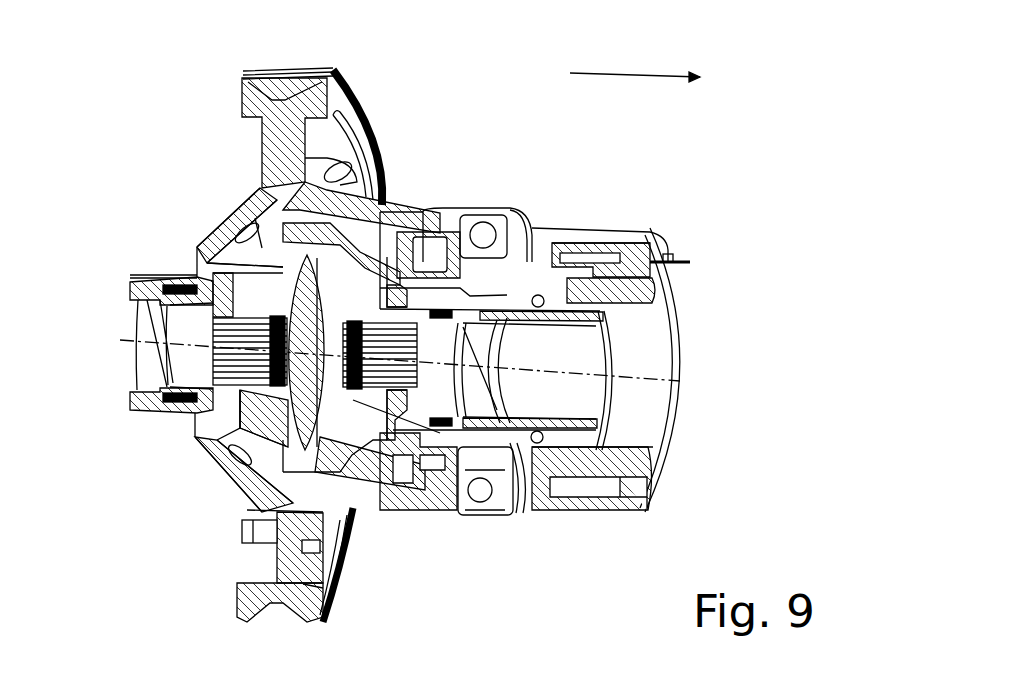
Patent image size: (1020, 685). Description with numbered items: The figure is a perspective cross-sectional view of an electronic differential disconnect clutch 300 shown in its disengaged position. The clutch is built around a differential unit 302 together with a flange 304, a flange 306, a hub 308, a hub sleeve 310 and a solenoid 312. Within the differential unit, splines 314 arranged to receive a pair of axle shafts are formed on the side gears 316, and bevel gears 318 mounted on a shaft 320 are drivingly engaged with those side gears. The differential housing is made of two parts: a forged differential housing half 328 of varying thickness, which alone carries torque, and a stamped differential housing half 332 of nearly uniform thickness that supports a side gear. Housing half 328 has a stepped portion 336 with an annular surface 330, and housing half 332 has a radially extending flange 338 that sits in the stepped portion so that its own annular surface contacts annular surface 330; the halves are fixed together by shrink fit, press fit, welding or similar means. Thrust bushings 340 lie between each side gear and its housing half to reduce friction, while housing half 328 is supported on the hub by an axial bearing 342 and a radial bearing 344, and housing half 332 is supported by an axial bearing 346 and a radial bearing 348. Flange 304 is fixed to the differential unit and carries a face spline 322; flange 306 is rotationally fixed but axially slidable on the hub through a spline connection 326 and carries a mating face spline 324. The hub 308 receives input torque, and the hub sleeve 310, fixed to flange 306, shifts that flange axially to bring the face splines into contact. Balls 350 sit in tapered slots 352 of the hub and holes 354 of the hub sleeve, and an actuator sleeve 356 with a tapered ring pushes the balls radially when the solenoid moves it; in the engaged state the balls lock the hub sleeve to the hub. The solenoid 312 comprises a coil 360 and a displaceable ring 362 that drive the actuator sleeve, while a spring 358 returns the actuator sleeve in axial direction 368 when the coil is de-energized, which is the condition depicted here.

The electronic differential disconnect clutch 300 is at (494, 127).
The differential unit 302 is at (233, 230).
The flange 304 is at (410, 230).
The flange 306 is at (453, 210).
The hub 308 is at (468, 492).
The hub sleeve 310 is at (507, 473).
The solenoid 312 is at (645, 216).
The splines 314 is at (200, 355).
The side gears 316 is at (207, 427).
The bevel gears 318 is at (253, 450).
The shaft 320 is at (280, 450).
The face spline 322 is at (353, 510).
The face spline 324 is at (393, 477).
The spline connection 326 is at (380, 245).
The differential housing half 328 is at (350, 520).
The annular surface 330 is at (300, 450).
The differential housing half 332 is at (147, 407).
The stepped portion 336 is at (267, 250).
The radially extending flange 338 is at (243, 217).
The thrust bushings 340 is at (217, 260).
The axial bearing 342 is at (470, 353).
The radial bearing 344 is at (507, 357).
The axial bearing 346 is at (213, 280).
The radial bearing 348 is at (137, 303).
The balls 350 is at (547, 473).
The tapered slots 352 is at (530, 314).
The holes 354 is at (607, 263).
The actuator sleeve 356 is at (577, 467).
The spring 358 is at (541, 294).
The coil 360 is at (673, 252).
The displaceable ring 362 is at (635, 292).
The axial direction 368 is at (636, 72).